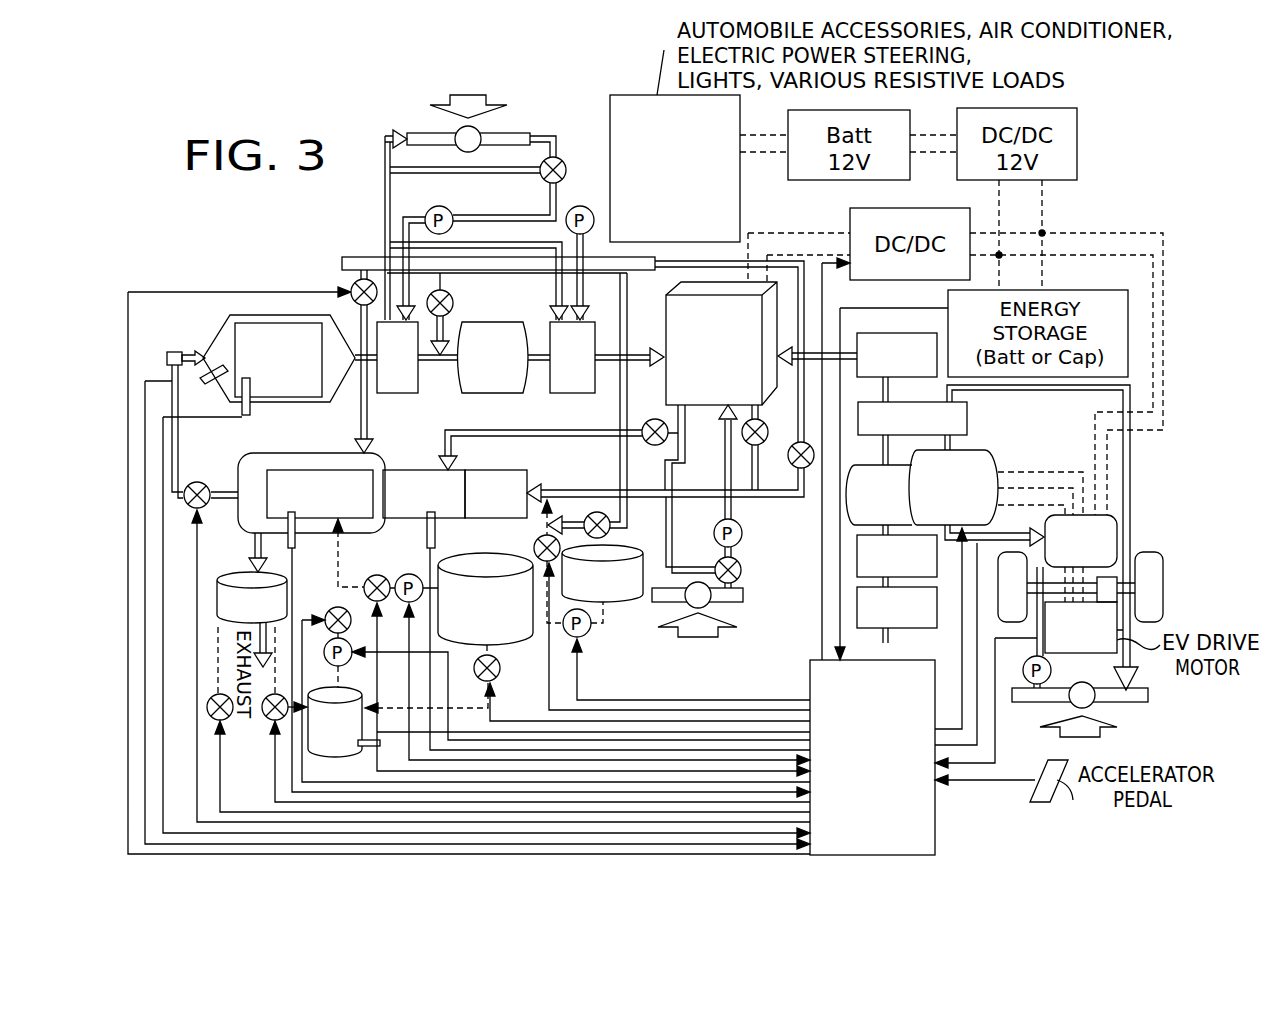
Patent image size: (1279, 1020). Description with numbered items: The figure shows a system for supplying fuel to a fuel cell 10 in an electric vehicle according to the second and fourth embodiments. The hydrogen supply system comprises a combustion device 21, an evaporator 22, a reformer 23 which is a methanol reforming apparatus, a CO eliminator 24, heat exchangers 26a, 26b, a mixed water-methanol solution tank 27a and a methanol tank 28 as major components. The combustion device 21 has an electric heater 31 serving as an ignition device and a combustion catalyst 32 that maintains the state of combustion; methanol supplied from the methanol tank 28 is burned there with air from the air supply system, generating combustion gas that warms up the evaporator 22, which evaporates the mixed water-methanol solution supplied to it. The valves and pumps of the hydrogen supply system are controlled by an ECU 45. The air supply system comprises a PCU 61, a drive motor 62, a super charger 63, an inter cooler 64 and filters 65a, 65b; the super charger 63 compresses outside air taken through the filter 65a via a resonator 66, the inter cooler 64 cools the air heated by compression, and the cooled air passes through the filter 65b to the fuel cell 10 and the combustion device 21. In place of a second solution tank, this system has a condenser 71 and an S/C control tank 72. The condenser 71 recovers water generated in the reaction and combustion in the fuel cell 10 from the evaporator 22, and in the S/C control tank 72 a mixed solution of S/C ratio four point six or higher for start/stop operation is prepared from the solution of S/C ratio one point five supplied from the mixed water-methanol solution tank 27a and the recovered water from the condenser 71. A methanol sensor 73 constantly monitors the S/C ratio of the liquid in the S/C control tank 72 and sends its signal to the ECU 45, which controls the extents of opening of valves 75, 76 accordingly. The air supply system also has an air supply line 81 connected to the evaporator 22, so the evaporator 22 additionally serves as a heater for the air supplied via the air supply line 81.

The fuel cell 10 is at (666, 330).
The combustion device 21 is at (405, 520).
The evaporator 22 is at (284, 455).
The reformer 23 is at (245, 315).
The CO eliminator 24 is at (487, 322).
The heat exchanger 26a is at (420, 383).
The heat exchanger 26b is at (548, 383).
The mixed water-methanol solution tank 27a is at (452, 555).
The methanol tank 28 is at (622, 604).
The electric heater 31 is at (480, 470).
The combustion catalyst 32 is at (517, 479).
The ECU 45 is at (937, 830).
The PCU 61 is at (1117, 535).
The drive motor 62 is at (985, 468).
The super charger 63 is at (855, 512).
The inter cooler 64 is at (968, 418).
The filter 65a is at (857, 558).
The filter 65b is at (873, 333).
The resonator 66 is at (857, 608).
The condenser 71 is at (233, 572).
The S/C control tank 72 is at (333, 758).
The methanol sensor 73 is at (368, 727).
The valve 75 is at (262, 720).
The valve 76 is at (500, 668).
The air supply line 81 is at (368, 425).